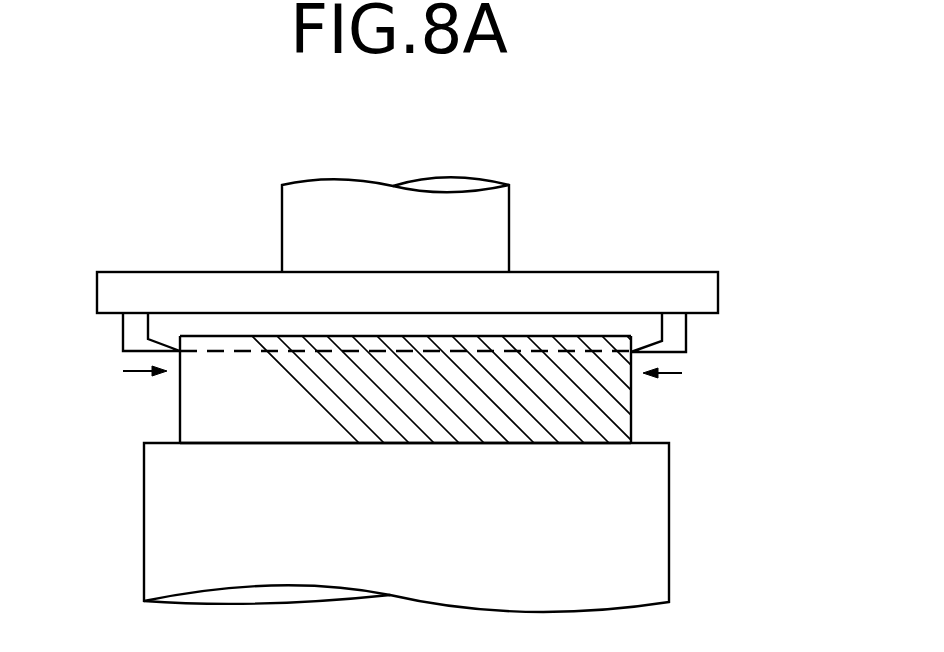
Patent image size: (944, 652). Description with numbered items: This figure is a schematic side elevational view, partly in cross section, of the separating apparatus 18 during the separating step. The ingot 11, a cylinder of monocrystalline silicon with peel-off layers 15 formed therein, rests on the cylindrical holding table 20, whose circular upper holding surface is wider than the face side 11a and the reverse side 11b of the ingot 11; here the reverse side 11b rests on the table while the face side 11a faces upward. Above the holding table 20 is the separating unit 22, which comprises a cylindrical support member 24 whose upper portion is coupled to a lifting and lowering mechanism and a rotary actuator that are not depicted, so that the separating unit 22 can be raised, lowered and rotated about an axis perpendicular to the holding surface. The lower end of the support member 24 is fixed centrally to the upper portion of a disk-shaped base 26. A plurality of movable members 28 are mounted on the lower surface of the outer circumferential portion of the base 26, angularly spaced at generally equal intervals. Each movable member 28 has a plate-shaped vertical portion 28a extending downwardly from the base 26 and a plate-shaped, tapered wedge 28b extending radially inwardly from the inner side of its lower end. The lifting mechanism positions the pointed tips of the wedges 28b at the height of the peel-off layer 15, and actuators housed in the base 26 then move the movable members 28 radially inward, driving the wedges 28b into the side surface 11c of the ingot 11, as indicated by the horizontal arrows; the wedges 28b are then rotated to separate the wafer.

The separating apparatus 18 is at (447, 190).
The separating unit 22 is at (722, 278).
The support member 24 is at (500, 223).
The base 26 is at (243, 280).
The movable member 28 is at (481, 350).
The vertical portion 28a is at (683, 333).
The wedge 28b is at (653, 353).
The ingot 11 is at (472, 322).
The face side 11a is at (573, 335).
The reverse side 11b is at (557, 444).
The side surface 11c is at (633, 417).
The peel-off layer 15 is at (324, 352).
The holding table 20 is at (657, 547).